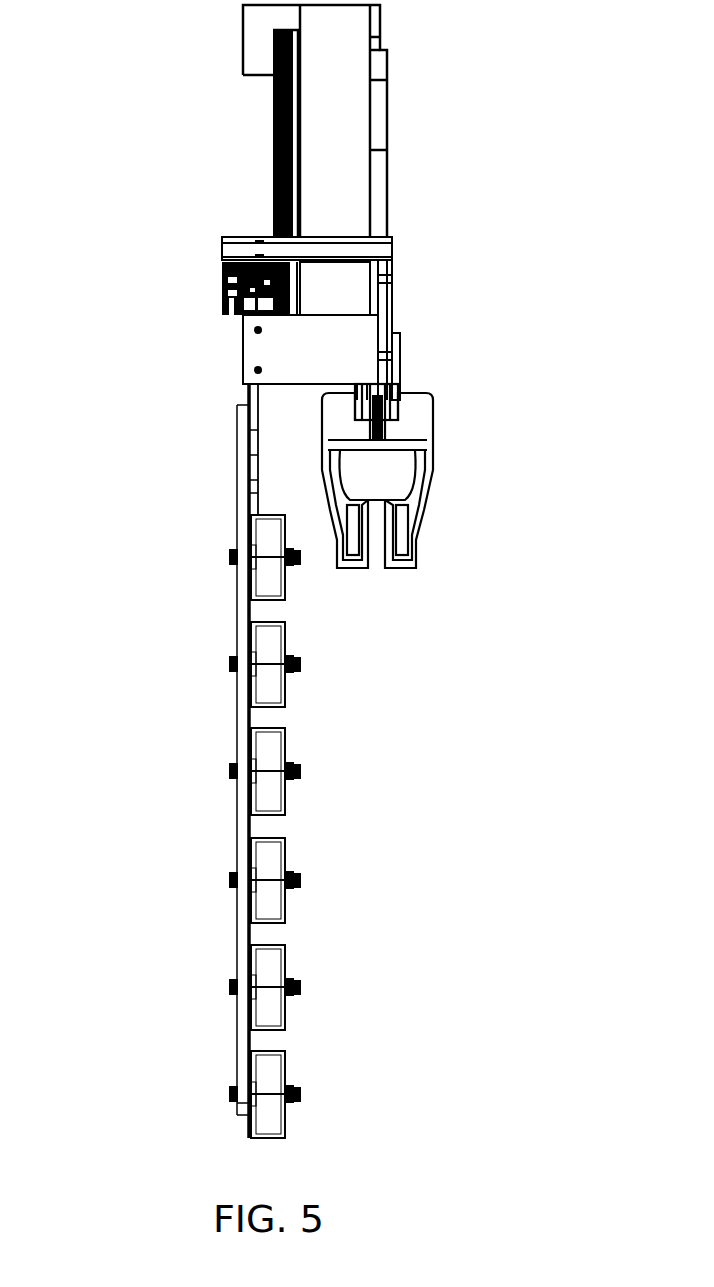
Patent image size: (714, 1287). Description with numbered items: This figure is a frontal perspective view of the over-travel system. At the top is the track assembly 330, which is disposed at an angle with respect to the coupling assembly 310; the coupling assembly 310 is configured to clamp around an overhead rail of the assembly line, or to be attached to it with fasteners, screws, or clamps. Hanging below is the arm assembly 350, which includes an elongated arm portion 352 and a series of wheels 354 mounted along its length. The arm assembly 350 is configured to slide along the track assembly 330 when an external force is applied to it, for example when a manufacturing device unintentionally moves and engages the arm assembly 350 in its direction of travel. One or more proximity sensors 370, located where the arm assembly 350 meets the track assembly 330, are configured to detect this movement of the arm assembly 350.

The coupling assembly 310 is at (467, 443).
The track assembly 330 is at (405, 141).
The arm assembly 350 is at (176, 723).
The arm portion 352 is at (237, 501).
The wheels 354 is at (285, 585).
The proximity sensors 370 is at (203, 280).